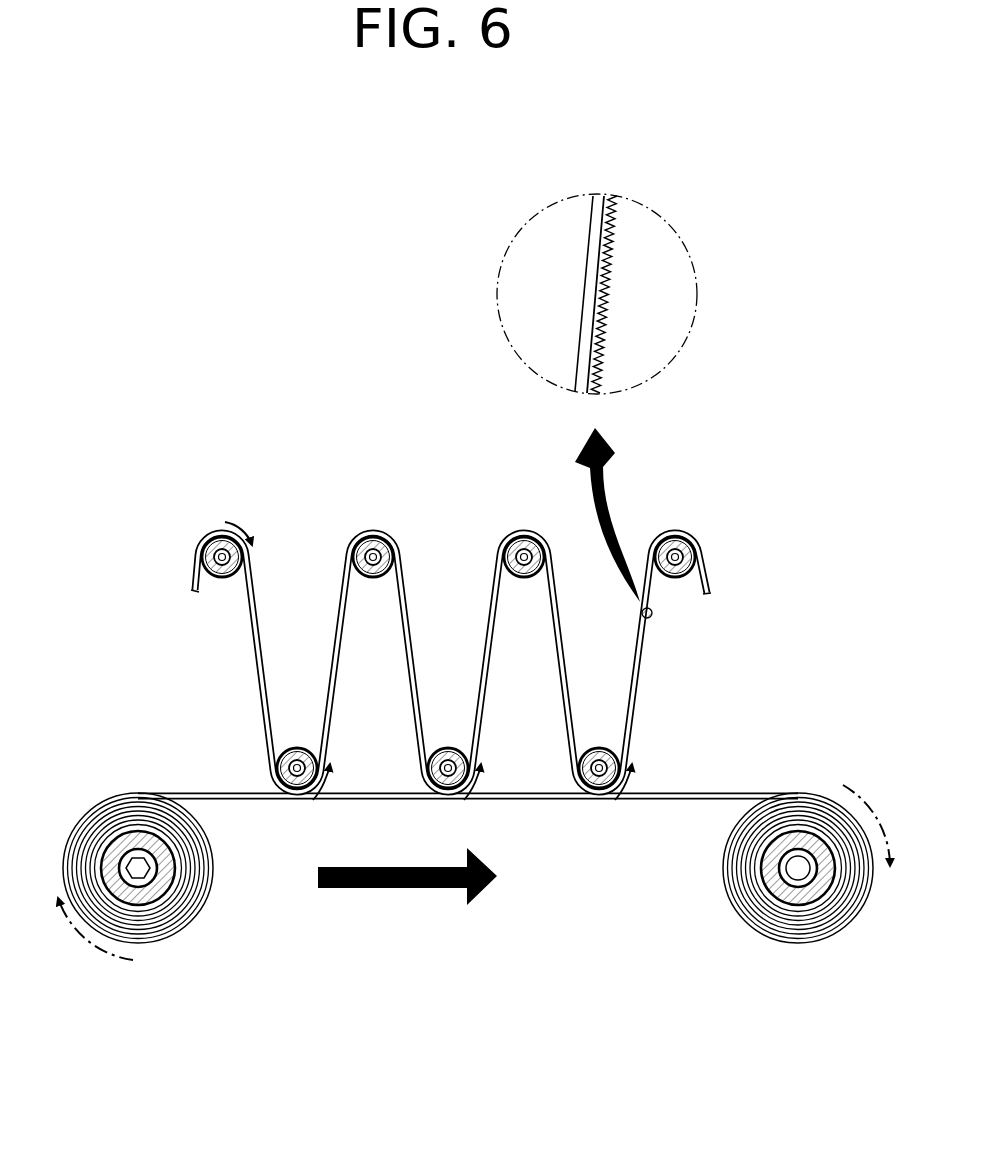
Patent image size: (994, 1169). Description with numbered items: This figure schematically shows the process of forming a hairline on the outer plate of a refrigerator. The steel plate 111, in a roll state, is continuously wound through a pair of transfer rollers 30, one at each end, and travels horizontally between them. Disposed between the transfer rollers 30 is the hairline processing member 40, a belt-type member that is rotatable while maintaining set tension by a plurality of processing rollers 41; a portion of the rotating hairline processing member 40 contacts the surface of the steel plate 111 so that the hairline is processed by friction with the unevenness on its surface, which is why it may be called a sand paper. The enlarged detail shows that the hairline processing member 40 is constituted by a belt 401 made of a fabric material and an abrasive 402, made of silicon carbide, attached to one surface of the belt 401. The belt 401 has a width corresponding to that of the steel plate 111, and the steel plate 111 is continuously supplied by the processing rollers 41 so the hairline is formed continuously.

The transfer roller 30 is at (170, 910).
The hairline processing member 40 is at (248, 513).
The processing roller 41 is at (283, 752).
The steel plate 111 is at (86, 780).
The belt 401 is at (587, 340).
The abrasive 402 is at (600, 290).